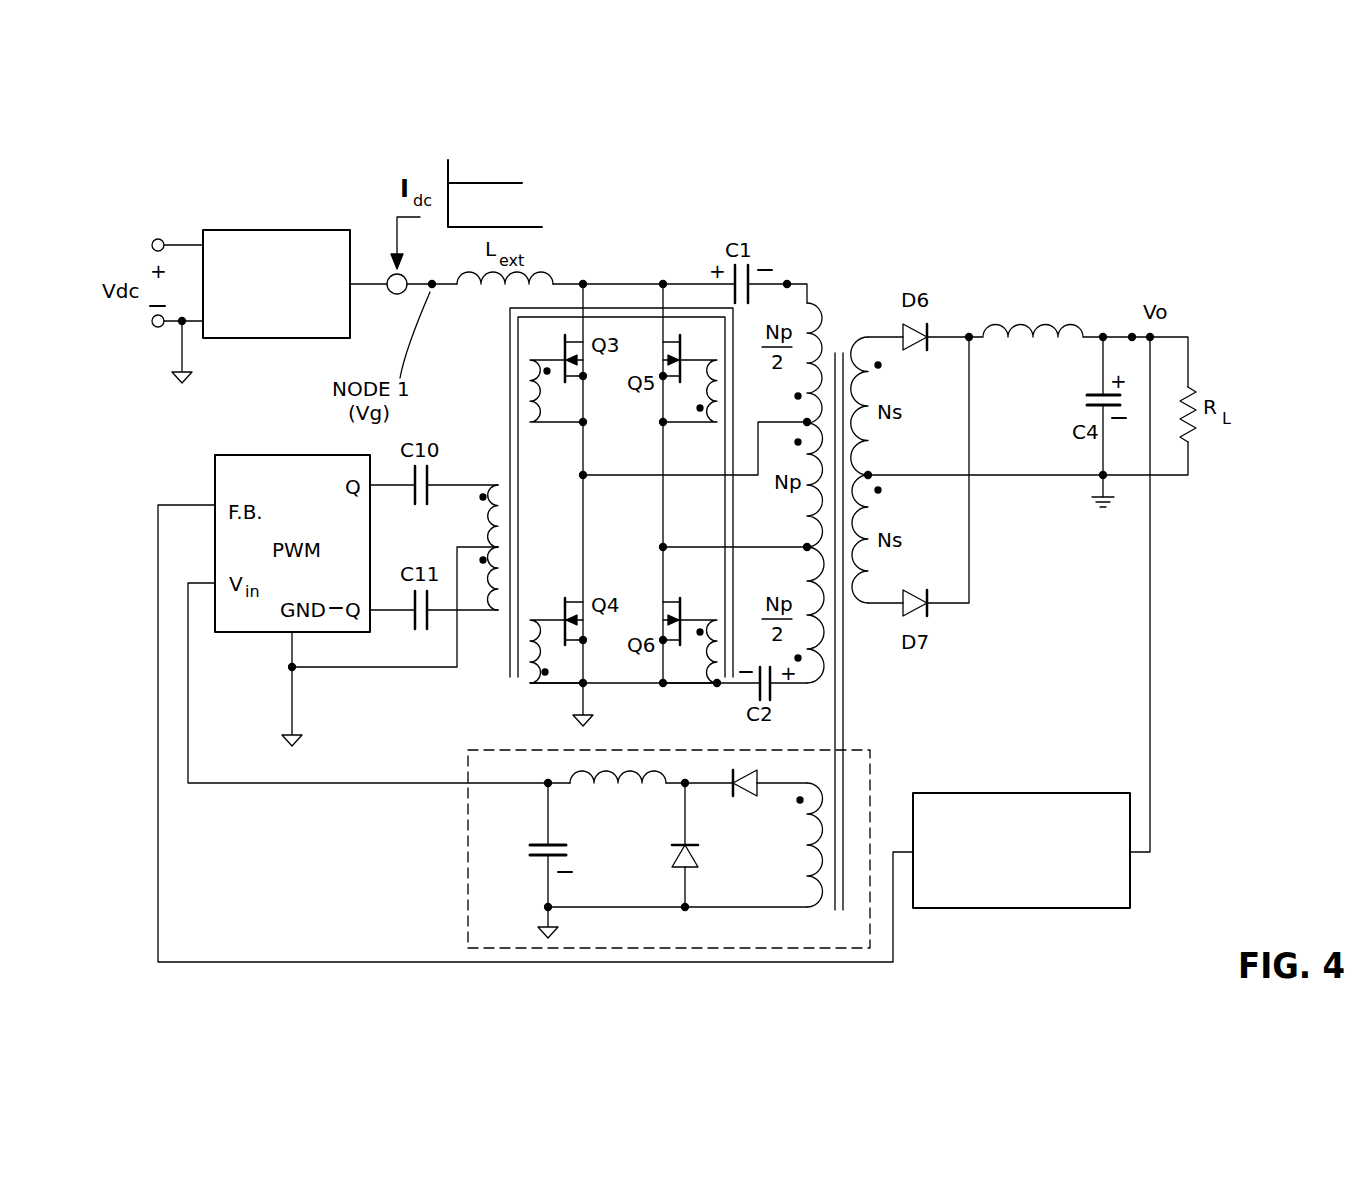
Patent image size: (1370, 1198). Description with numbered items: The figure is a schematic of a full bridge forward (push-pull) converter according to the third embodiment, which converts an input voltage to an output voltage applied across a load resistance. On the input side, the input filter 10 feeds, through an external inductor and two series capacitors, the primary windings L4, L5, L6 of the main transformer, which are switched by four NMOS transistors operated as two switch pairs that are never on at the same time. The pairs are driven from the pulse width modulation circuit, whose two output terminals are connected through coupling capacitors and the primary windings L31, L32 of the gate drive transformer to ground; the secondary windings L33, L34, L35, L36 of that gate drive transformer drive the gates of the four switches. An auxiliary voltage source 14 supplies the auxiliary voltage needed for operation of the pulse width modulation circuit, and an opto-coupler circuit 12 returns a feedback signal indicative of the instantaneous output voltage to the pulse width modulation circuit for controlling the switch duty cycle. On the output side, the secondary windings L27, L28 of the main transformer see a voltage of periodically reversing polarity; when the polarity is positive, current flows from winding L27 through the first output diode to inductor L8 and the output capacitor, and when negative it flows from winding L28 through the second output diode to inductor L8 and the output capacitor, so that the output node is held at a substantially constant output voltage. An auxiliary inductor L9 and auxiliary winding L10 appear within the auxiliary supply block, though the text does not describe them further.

The input filter 10 is at (248, 230).
The opto-coupler circuit 12 is at (1027, 793).
The auxiliary voltage source 14 is at (642, 849).
The primary winding of transformer T2 L4 is at (816, 303).
The primary winding of transformer T2 L5 is at (805, 525).
The primary winding of transformer T2 L6 is at (805, 582).
The inductor L8 is at (1028, 326).
The auxiliary inductor L9 is at (598, 785).
The auxiliary winding NAUX L10 is at (810, 872).
The secondary winding of transformer T2 L27 is at (870, 377).
The secondary winding of transformer T2 L28 is at (870, 504).
The primary winding of transformer T1 L31 is at (486, 526).
The primary winding of transformer T1 L32 is at (497, 614).
The secondary winding of transformer T1 L33 is at (537, 428).
The secondary winding of transformer T1 L34 is at (536, 612).
The secondary winding of transformer T1 L35 is at (718, 428).
The secondary winding of transformer T1 L36 is at (718, 690).